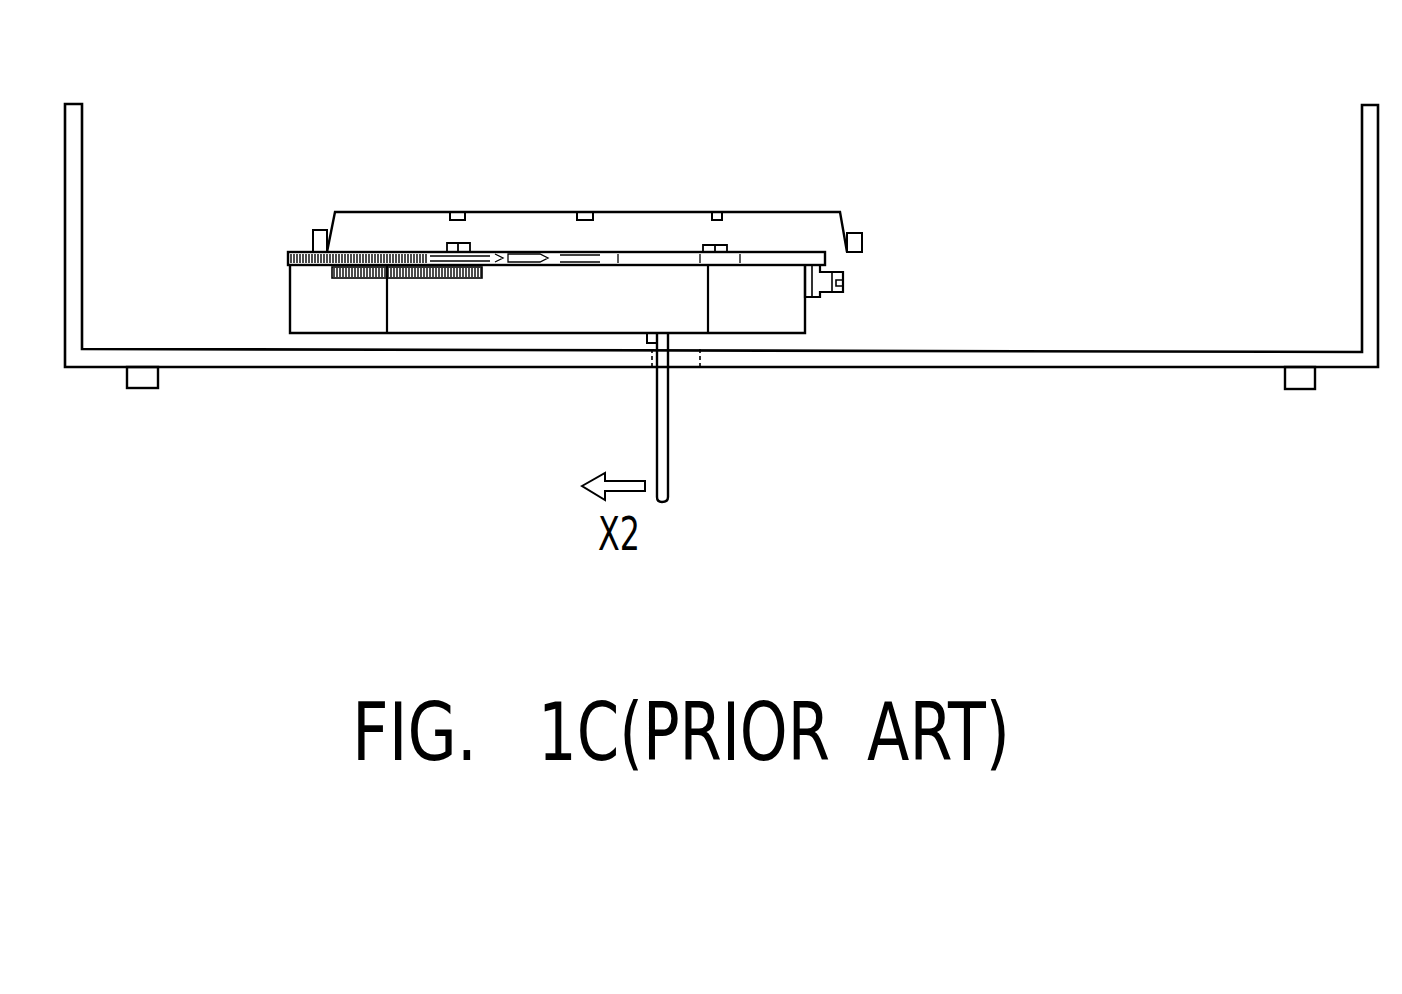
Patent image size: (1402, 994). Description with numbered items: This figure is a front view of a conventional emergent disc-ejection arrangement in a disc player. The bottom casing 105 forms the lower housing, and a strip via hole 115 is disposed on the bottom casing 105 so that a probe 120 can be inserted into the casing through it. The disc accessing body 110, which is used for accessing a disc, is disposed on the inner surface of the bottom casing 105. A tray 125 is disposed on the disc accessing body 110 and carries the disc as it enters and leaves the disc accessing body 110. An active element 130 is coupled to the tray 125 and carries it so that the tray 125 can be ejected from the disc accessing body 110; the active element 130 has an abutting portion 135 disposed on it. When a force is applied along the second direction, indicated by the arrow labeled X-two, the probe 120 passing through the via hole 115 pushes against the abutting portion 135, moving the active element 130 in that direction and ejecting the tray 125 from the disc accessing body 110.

The bottom casing 105 is at (1047, 367).
The disc accessing body 110 is at (919, 289).
The via hole 115 is at (685, 375).
The probe 120 is at (668, 475).
The tray 125 is at (655, 212).
The active element 130 is at (290, 293).
The abutting portion 135 is at (650, 338).